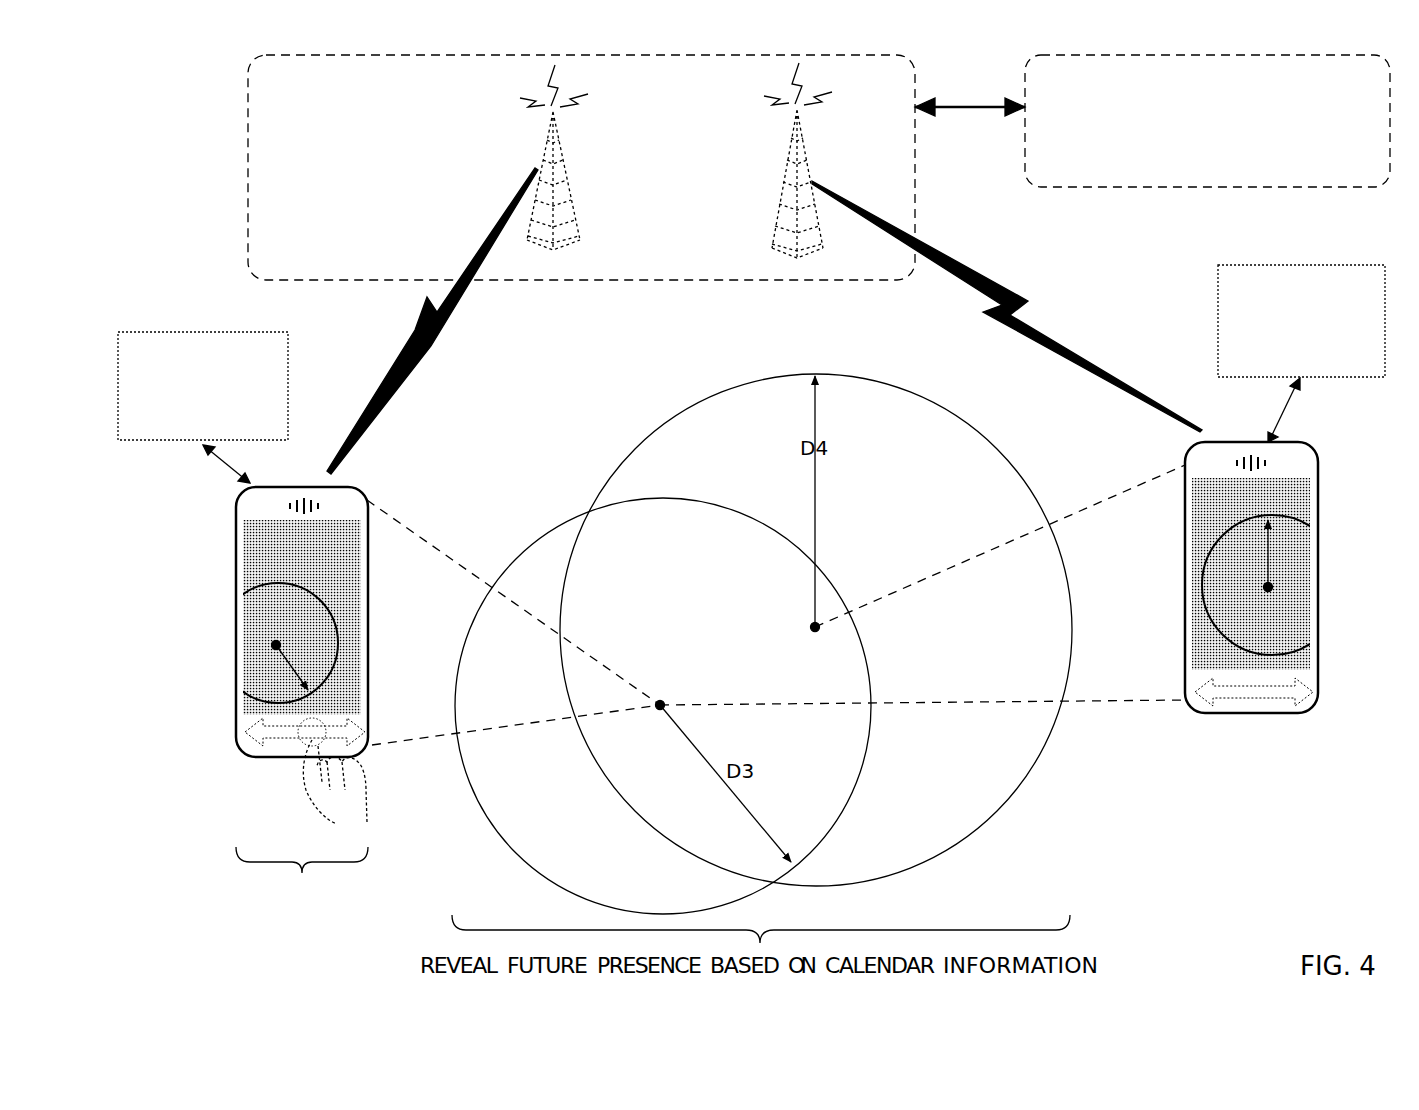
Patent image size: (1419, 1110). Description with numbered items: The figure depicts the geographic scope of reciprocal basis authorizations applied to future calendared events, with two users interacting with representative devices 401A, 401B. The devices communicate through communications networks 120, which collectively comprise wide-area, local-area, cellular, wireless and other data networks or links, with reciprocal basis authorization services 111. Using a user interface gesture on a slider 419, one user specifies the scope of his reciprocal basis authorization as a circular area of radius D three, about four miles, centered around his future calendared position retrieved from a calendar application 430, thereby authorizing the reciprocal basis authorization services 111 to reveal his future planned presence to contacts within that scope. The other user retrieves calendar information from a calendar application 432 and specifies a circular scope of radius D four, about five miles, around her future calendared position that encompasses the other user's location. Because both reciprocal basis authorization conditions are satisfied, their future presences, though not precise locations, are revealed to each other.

The communications networks 120 is at (440, 127).
The reciprocal basis authorization services 111 is at (1308, 127).
The calendar application 430 is at (203, 407).
The calendar application 432 is at (1301, 353).
The device 401A is at (368, 486).
The device 401B is at (1320, 448).
The slider 419 is at (360, 912).